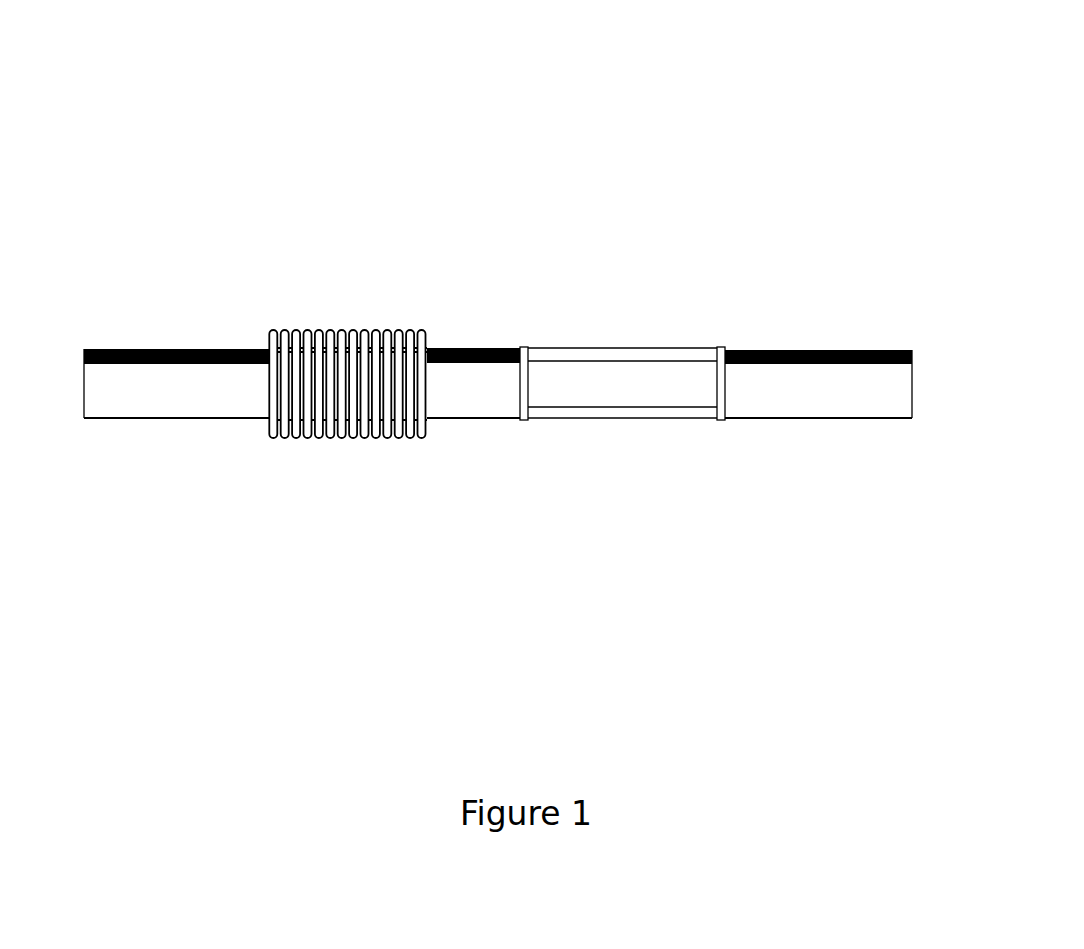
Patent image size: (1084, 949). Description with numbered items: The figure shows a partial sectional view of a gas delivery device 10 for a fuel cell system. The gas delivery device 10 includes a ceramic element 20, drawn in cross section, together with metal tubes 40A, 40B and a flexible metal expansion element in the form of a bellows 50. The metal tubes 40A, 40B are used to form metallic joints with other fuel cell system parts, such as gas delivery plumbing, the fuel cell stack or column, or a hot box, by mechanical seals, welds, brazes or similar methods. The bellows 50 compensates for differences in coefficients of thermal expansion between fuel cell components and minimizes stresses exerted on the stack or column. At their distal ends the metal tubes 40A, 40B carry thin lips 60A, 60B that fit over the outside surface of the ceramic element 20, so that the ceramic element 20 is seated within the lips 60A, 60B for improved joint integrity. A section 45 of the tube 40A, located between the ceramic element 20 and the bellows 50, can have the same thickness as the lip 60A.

The gas delivery device 10 is at (255, 152).
The ceramic element 20 is at (636, 330).
The metal tube 40A is at (180, 335).
The metal tube 40B is at (787, 333).
The section of tube 45 is at (468, 332).
The bellows 50 is at (335, 466).
The lip 60A is at (537, 428).
The lip 60B is at (718, 427).